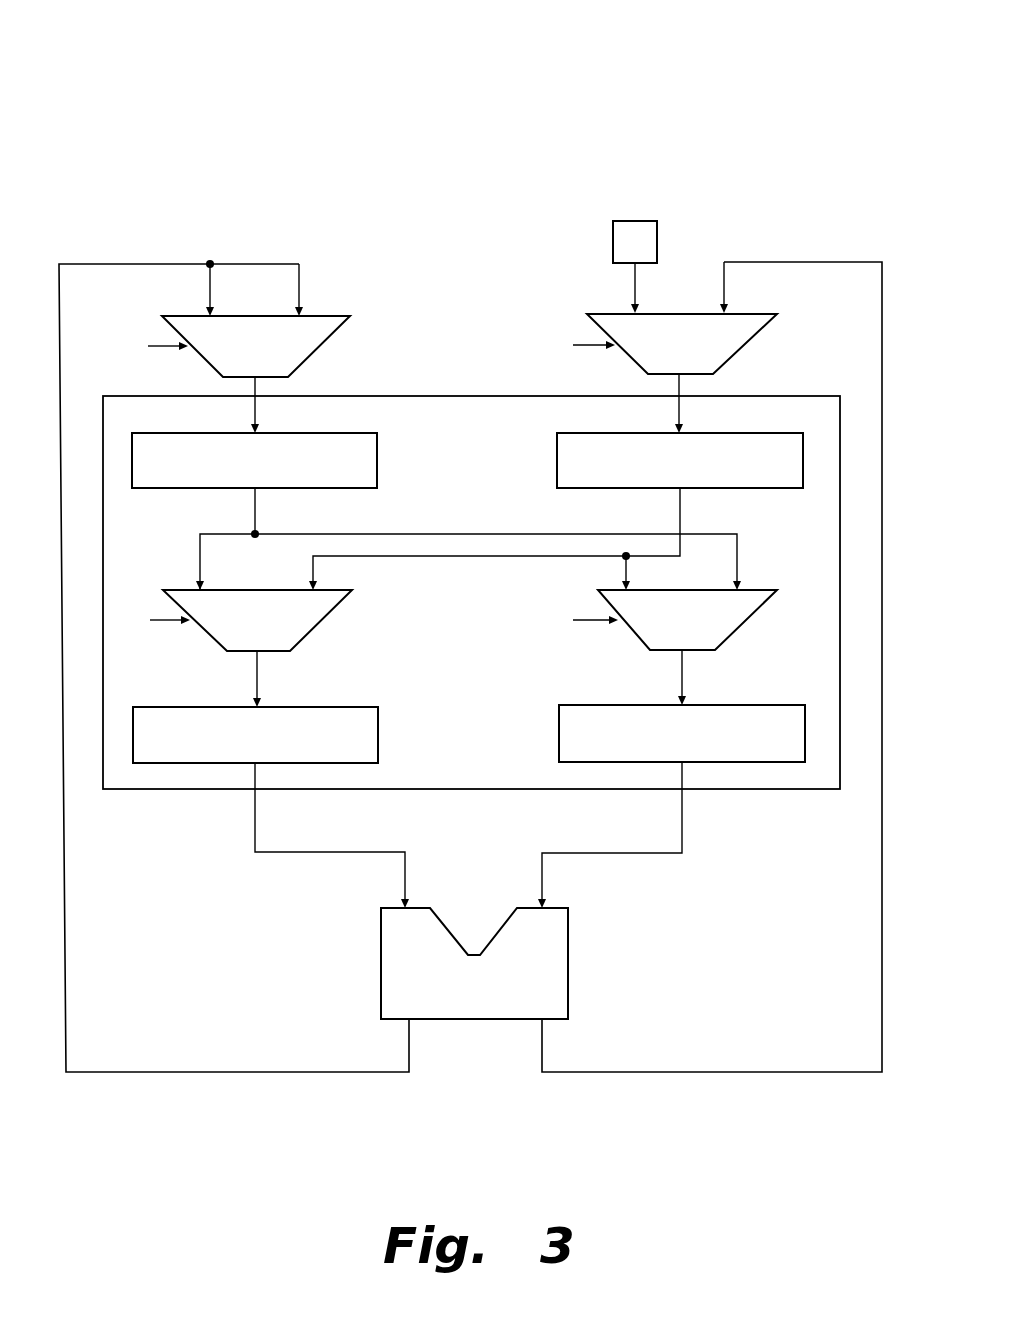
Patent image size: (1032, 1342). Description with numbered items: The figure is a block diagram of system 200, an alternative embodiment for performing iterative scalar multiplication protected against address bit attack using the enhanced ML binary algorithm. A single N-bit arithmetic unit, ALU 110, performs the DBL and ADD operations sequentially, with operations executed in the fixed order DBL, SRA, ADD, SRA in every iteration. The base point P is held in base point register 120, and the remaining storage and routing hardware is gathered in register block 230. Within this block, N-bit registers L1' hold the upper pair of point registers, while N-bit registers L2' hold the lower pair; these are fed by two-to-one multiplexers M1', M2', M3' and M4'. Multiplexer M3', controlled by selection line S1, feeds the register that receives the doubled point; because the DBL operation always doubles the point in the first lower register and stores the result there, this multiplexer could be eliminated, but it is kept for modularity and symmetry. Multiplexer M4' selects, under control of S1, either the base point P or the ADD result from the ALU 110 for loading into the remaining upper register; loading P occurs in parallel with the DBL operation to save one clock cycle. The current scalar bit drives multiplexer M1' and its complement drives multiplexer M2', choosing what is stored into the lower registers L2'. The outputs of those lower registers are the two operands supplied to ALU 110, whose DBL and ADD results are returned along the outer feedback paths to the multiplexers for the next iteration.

The system 200 is at (760, 78).
The base point register 120 is at (657, 221).
The register block 230 is at (435, 396).
The ALU 110 is at (568, 973).
The multiplexer M1' is at (255, 648).
The multiplexer M2' is at (669, 647).
The multiplexer M3' is at (253, 374).
The multiplexer M4' is at (679, 373).
The register L1' is at (467, 495).
The register L2' is at (473, 715).